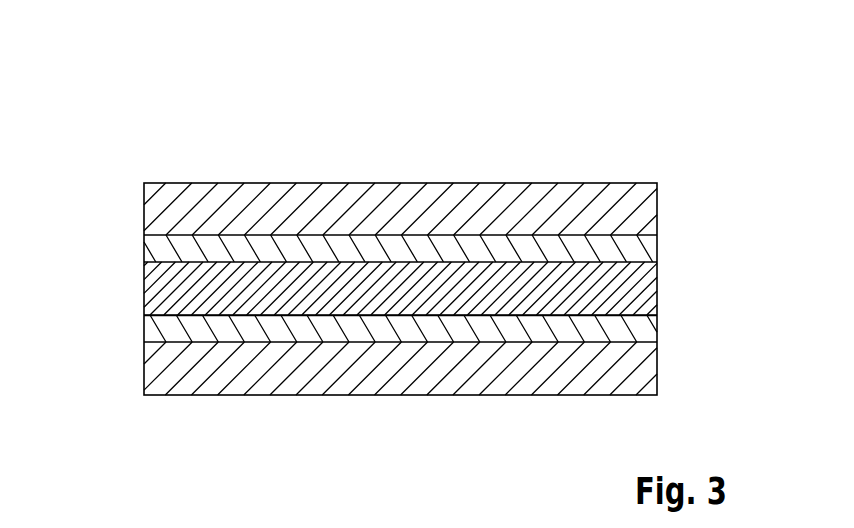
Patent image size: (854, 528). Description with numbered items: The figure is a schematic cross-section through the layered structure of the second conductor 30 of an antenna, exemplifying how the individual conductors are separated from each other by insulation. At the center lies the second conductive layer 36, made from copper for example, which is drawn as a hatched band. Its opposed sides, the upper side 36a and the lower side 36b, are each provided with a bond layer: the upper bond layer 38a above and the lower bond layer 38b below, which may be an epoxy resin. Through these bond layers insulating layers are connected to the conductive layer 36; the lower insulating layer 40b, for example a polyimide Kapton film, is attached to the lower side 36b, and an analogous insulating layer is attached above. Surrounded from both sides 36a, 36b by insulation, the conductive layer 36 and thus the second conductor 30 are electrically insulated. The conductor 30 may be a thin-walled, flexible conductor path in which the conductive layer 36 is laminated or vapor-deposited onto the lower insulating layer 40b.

The second conductor 30 is at (122, 172).
The second conductive layer 36 is at (163, 288).
The upper side of the conductive layer 36a is at (448, 262).
The lower side of the conductive layer 36b is at (373, 316).
The upper bond layer 38a is at (337, 200).
The lower bond layer 38b is at (203, 330).
The lower insulating layer 40b is at (535, 368).